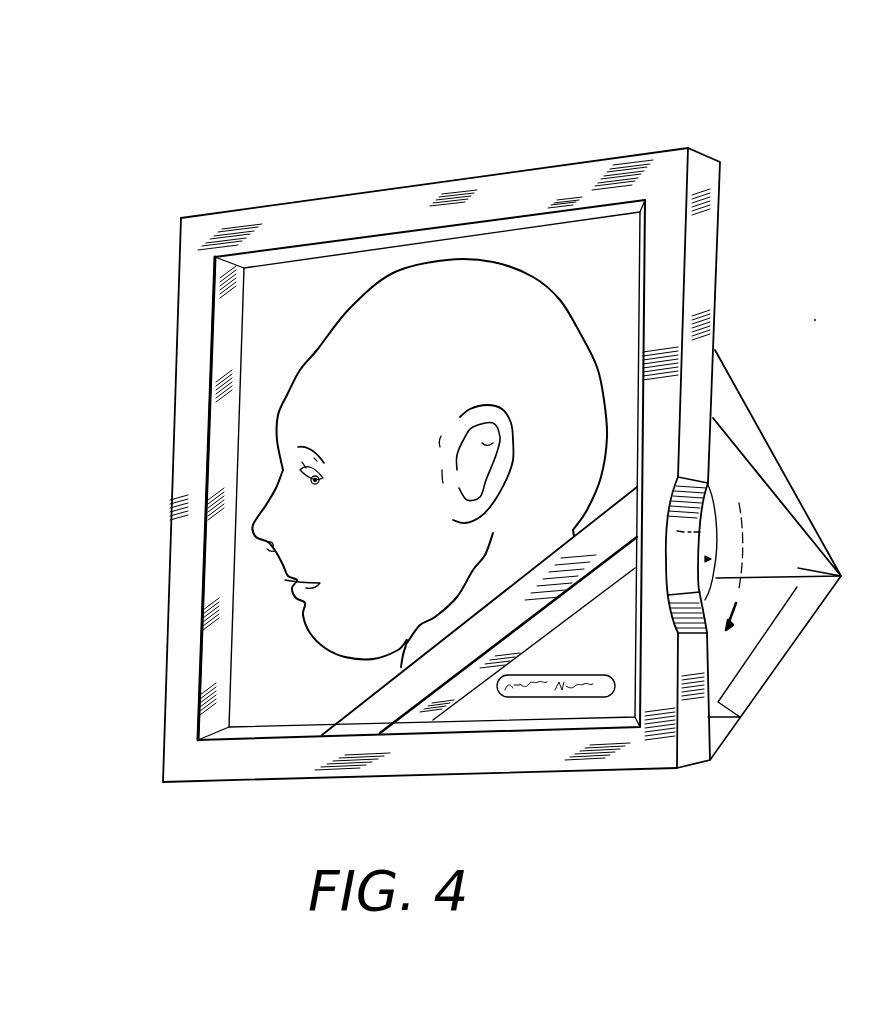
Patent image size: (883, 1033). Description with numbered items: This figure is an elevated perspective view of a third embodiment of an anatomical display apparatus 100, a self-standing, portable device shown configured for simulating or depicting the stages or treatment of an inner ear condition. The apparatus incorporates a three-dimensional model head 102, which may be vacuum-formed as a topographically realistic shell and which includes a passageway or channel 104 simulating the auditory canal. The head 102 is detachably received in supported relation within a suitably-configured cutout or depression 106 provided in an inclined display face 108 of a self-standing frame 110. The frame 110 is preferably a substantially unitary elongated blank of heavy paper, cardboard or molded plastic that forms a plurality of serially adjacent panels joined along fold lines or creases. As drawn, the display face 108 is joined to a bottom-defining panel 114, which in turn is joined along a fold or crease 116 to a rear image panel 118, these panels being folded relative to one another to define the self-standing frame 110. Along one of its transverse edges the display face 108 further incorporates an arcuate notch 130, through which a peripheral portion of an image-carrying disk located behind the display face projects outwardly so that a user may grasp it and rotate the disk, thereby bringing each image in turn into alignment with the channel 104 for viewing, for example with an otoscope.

The anatomical display apparatus 100 is at (273, 158).
The three-dimensional model head 102 is at (443, 345).
The passageway or channel 104 is at (489, 444).
The cutout or depression 106 is at (345, 315).
The display face 108 is at (607, 271).
The self-standing frame 110 is at (579, 160).
The bottom-defining panel 114 is at (727, 660).
The fold or crease 116 is at (773, 580).
The rear image panel 118 is at (762, 542).
The arcuate notch 130 is at (680, 603).